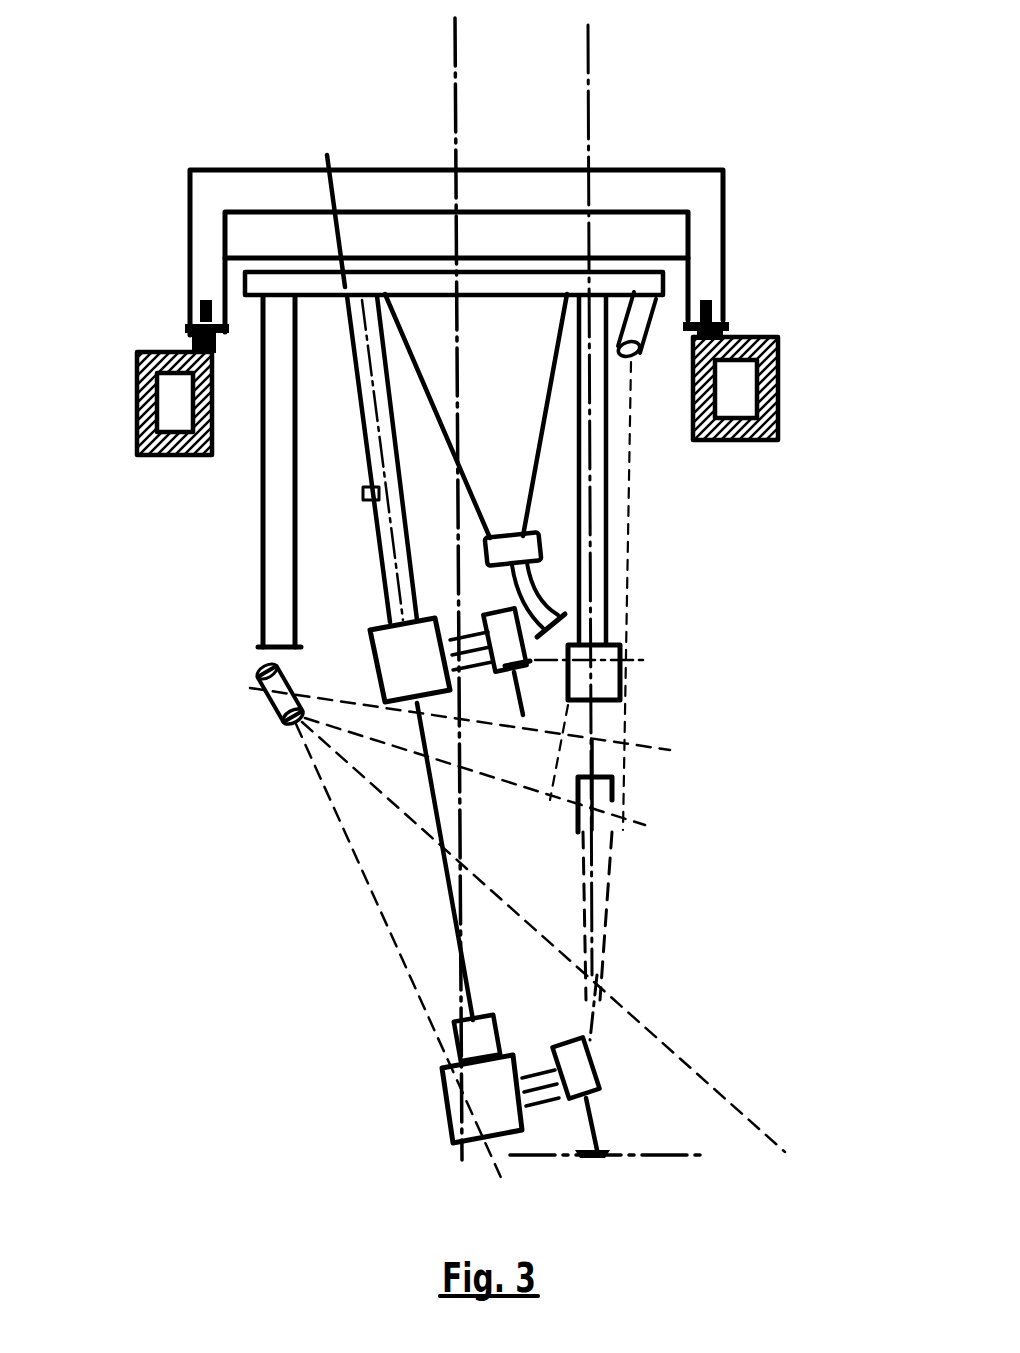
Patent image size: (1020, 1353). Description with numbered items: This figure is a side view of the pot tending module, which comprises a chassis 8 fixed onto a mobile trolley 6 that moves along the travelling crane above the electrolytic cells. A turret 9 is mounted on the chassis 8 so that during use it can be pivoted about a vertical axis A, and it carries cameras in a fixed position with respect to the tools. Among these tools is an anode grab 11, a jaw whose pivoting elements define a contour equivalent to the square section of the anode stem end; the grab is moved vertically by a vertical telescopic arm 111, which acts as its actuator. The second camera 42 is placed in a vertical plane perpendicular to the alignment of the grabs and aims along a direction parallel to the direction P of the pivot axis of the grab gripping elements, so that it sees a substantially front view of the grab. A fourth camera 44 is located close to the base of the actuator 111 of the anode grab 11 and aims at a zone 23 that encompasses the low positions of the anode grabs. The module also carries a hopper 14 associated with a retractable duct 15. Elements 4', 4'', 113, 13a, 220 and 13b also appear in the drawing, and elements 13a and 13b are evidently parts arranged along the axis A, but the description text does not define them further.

The vertical axis A is at (458, 128).
The mobile trolley 6 is at (712, 232).
The chassis 8 is at (403, 233).
The turret 9 is at (277, 282).
The left guide rail 4' is at (148, 339).
The right guide rail 4'' is at (772, 341).
The hopper 14 is at (490, 330).
The fourth camera 44 is at (655, 297).
The slanted tube 113 is at (372, 493).
The vertical telescopic arm 111 is at (598, 522).
The upper carriage block 13a is at (372, 632).
The retractable duct 15 is at (522, 622).
The direction of the pivot axis P is at (607, 654).
The anode grab 11 is at (612, 680).
The second camera 42 is at (257, 674).
The zone 23 is at (606, 765).
The bracket 220 is at (612, 787).
The lower carriage block 13b is at (598, 1078).